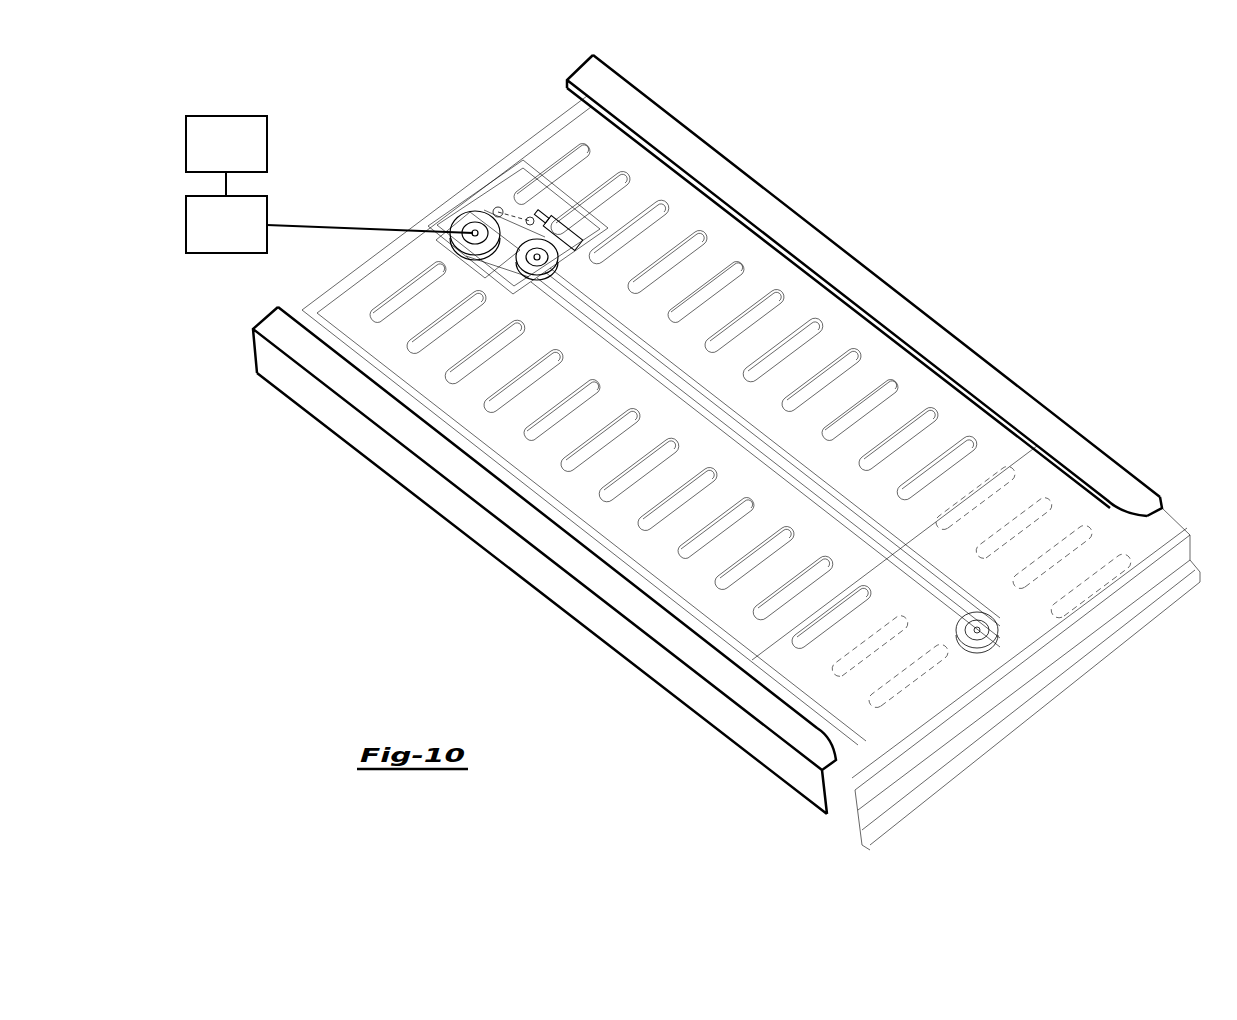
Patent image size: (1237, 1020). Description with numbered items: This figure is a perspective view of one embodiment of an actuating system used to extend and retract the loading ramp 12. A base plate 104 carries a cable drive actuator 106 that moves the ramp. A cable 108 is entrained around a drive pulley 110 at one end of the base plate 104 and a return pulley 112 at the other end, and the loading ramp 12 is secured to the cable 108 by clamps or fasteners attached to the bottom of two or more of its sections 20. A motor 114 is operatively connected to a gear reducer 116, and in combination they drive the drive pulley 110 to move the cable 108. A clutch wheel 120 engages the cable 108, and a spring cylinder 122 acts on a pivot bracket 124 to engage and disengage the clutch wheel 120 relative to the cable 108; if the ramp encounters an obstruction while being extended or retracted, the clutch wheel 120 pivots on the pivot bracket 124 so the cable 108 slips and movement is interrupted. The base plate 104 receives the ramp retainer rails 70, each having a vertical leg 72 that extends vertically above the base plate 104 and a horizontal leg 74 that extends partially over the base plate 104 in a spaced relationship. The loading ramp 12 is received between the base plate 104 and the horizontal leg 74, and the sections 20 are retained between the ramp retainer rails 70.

The loading ramp 12 is at (1035, 466).
The sections 20 is at (820, 697).
The ramp retainer rails 70 is at (912, 330).
The vertical leg 72 is at (529, 560).
The horizontal leg 74 is at (995, 383).
The base plate 104 is at (735, 251).
The cable drive actuator 106 is at (487, 168).
The cable 108 is at (688, 398).
The drive pulley 110 is at (457, 222).
The return pulley 112 is at (992, 643).
The motor 114 is at (186, 151).
The gear reducer 116 is at (186, 231).
The clutch wheel 120 is at (556, 268).
The spring cylinder 122 is at (568, 226).
The pivot bracket 124 is at (520, 221).